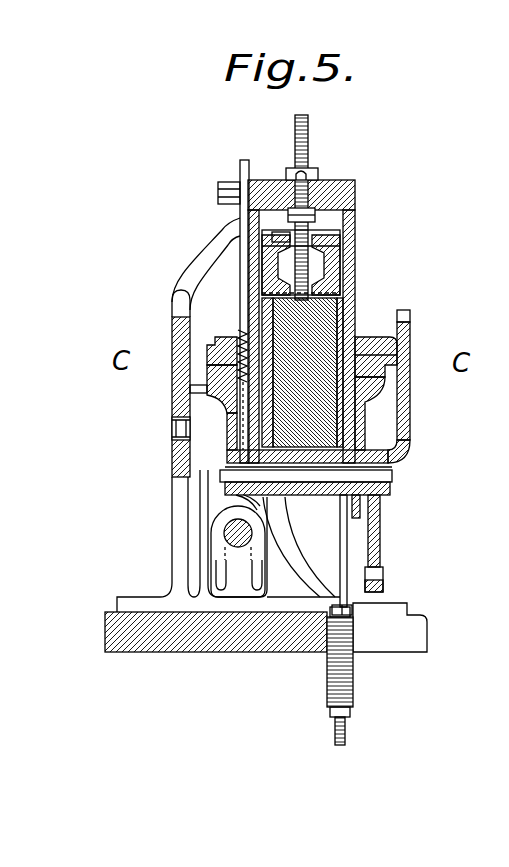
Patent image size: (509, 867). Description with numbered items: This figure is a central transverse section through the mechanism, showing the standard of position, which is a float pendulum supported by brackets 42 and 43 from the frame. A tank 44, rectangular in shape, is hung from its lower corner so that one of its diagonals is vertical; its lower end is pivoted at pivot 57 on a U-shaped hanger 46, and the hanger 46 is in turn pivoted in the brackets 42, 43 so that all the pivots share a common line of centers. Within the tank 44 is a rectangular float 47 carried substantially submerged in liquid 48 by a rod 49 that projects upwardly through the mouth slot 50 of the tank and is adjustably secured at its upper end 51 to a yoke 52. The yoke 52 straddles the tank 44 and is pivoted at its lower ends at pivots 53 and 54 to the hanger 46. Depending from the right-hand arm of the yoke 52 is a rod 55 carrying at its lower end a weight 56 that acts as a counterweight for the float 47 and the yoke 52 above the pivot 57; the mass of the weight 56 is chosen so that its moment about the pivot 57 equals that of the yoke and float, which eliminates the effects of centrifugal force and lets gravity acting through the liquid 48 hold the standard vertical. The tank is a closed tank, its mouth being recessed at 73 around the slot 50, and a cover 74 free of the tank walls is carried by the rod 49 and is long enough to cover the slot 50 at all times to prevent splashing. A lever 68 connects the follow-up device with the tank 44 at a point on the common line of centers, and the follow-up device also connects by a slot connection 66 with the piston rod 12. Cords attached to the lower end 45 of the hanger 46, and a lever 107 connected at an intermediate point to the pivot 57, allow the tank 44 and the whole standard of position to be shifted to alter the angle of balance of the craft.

The piston rod 12 is at (230, 535).
The bracket 42 is at (208, 393).
The bracket 43 is at (372, 388).
The tank 44 is at (326, 296).
The lower end of hanger 45 is at (408, 372).
The U-shaped hanger 46 is at (228, 440).
The float 47 is at (300, 333).
The liquid 48 is at (302, 292).
The rod 49 is at (300, 253).
The mouth slot 50 is at (265, 260).
The upper end of rod 51 is at (312, 176).
The yoke 52 is at (356, 196).
The pivot 53 is at (383, 500).
The pivot 54 is at (246, 506).
The rod 55 is at (348, 540).
The weight 56 is at (355, 680).
The pivot 57 is at (390, 476).
The slot connection 66 is at (226, 567).
The lever 68 is at (247, 335).
The recess 73 is at (318, 220).
The cover 74 is at (283, 232).
The lever 107 is at (410, 428).